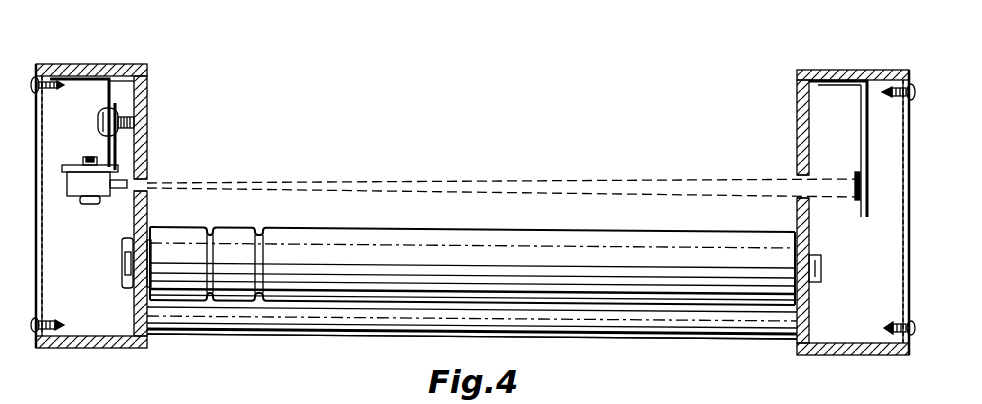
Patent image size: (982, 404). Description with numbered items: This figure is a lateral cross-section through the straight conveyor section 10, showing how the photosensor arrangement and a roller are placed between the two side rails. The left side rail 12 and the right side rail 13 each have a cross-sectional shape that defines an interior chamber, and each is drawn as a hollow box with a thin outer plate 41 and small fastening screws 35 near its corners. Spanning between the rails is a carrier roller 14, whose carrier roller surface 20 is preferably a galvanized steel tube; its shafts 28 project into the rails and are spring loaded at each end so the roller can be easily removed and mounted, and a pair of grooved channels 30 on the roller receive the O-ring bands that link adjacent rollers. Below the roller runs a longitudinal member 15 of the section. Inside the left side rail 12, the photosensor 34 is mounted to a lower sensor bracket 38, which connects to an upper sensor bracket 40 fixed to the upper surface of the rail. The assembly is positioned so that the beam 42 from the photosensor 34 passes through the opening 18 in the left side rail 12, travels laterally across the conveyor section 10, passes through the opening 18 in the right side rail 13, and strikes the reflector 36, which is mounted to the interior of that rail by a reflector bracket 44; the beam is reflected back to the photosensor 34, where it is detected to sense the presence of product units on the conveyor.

The straight conveyor section 10 is at (611, 110).
The left side rail 12 is at (105, 64).
The right side rail 13 is at (835, 70).
The carrier roller 14 is at (343, 220).
The support bar 15 is at (592, 338).
The opening 18 is at (147, 190).
The carrier roller surface 20 is at (664, 307).
The shaft 28 is at (120, 268).
The grooved channel 30 is at (259, 301).
The photosensor 34 is at (103, 200).
The screws 35 is at (63, 88).
The reflector 36 is at (855, 185).
The lower sensor bracket 38 is at (134, 148).
The upper sensor bracket 40 is at (132, 84).
The side plate 41 is at (42, 258).
The beam 42 is at (470, 178).
The reflector bracket 44 is at (858, 108).